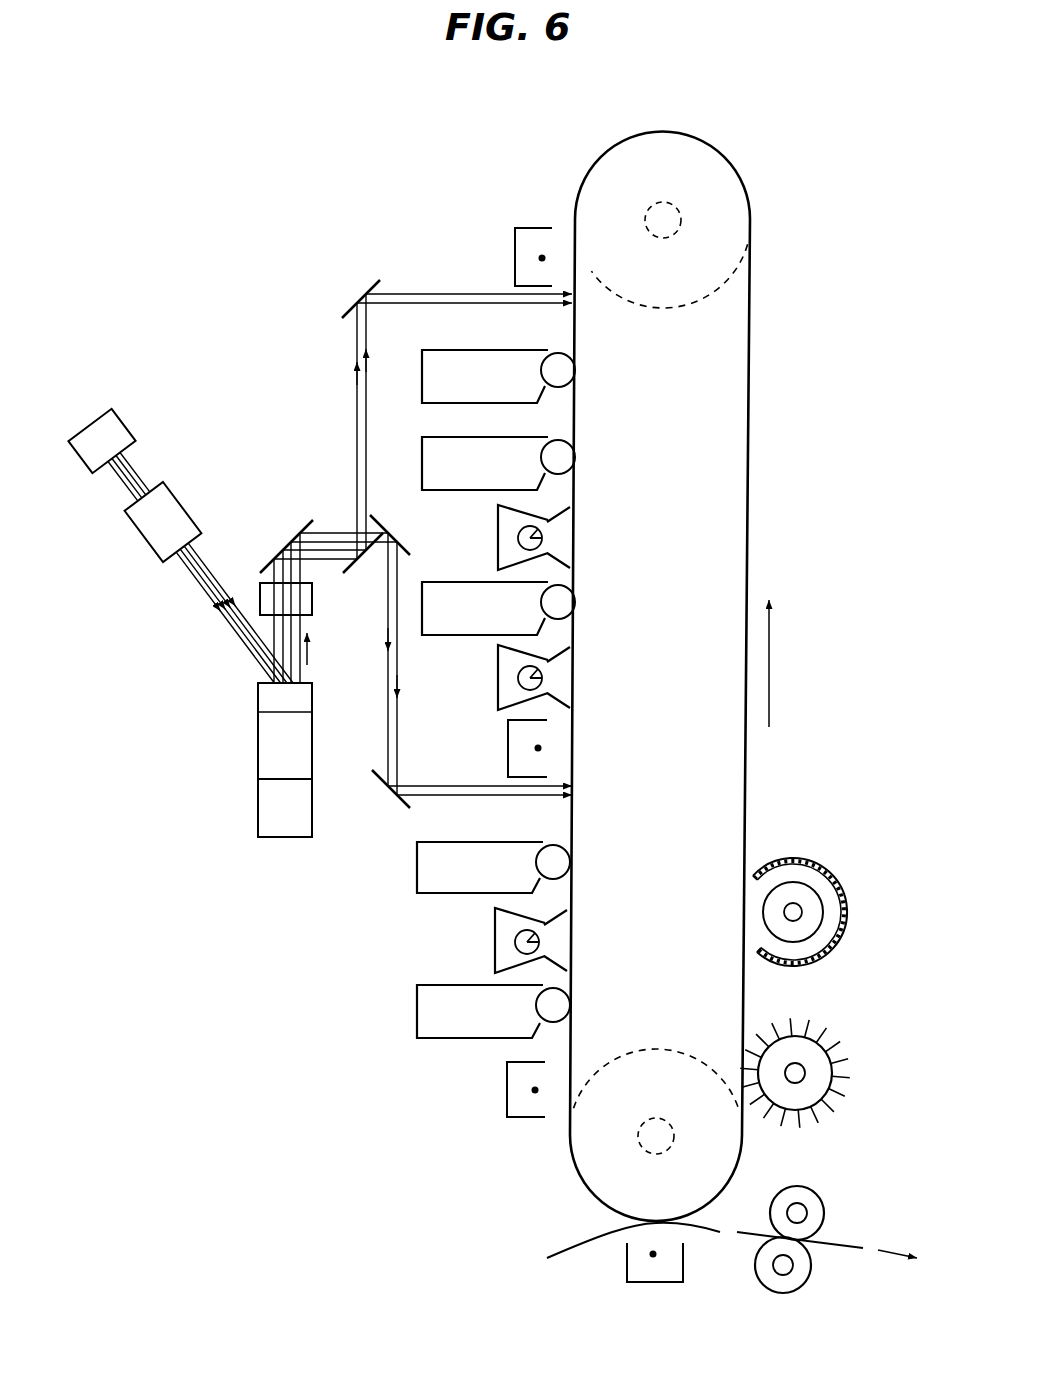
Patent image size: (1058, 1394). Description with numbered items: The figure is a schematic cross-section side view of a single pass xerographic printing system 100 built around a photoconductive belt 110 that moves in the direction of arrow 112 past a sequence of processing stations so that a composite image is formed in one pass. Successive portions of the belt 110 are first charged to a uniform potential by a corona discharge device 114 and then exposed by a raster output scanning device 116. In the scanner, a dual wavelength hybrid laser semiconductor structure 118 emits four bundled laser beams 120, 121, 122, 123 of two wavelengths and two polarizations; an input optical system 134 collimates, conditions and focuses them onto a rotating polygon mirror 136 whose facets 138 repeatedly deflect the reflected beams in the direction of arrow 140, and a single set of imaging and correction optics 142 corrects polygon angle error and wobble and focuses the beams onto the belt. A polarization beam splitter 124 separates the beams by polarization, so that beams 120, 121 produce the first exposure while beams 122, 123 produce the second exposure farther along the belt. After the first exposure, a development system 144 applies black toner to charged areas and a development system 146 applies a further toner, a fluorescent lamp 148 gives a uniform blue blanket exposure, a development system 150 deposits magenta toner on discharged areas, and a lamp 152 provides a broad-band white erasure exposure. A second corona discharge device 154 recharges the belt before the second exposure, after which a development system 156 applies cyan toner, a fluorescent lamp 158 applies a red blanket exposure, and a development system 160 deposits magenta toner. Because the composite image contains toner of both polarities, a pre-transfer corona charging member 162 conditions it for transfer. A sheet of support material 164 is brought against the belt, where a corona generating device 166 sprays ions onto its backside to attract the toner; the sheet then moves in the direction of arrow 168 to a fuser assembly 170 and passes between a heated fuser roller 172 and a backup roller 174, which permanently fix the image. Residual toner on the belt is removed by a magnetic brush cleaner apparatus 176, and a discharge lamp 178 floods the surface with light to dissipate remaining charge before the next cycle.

The single pass xerographic printing system 100 is at (333, 172).
The photoconductive belt 110 is at (710, 138).
The arrow 112 is at (770, 658).
The corona discharge device 114 is at (512, 252).
The raster output scanning device 116 is at (140, 388).
The dual wavelength hybrid laser semiconductor structure 118 is at (103, 423).
The laser beam 120 is at (113, 478).
The laser beam 121 is at (130, 494).
The laser beam 122 is at (143, 480).
The laser beam 123 is at (131, 460).
The polarization beam splitter 124 is at (348, 571).
The input optical system 134 is at (183, 517).
The rotating polygon mirror 136 is at (312, 760).
The facets 138 is at (270, 693).
The arrow 140 is at (310, 655).
The imaging and correction optics 142 is at (312, 598).
The development system 144 is at (422, 382).
The development system 146 is at (422, 470).
The fluorescent lamp 148 is at (497, 503).
The development system 150 is at (492, 580).
The fluorescent or incandescent lamp 152 is at (497, 663).
The corona discharge device 154 is at (508, 757).
The development system 156 is at (455, 887).
The fluorescent lamp 158 is at (495, 921).
The development system 160 is at (455, 1035).
The pre-transfer corona charging member 162 is at (527, 1120).
The sheet of support material 164 is at (572, 1250).
The corona generating device 166 is at (625, 1255).
The arrow 168 is at (880, 1256).
The fuser assembly 170 is at (808, 1240).
The heated fuser roller 172 is at (783, 1293).
The backup roller 174 is at (823, 1200).
The cleaner apparatus 176 is at (815, 1060).
The discharge lamp 178 is at (812, 885).